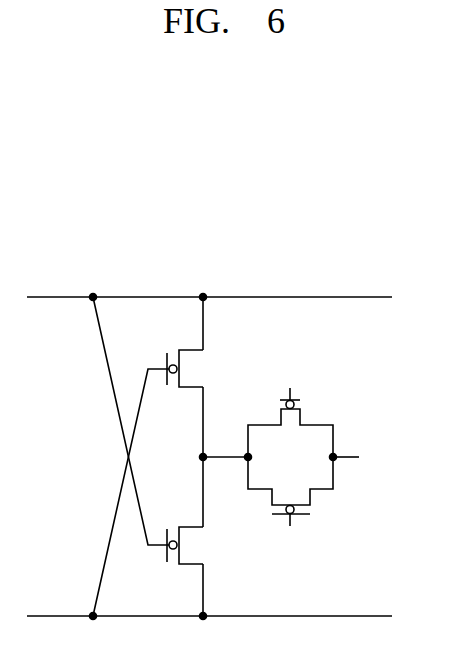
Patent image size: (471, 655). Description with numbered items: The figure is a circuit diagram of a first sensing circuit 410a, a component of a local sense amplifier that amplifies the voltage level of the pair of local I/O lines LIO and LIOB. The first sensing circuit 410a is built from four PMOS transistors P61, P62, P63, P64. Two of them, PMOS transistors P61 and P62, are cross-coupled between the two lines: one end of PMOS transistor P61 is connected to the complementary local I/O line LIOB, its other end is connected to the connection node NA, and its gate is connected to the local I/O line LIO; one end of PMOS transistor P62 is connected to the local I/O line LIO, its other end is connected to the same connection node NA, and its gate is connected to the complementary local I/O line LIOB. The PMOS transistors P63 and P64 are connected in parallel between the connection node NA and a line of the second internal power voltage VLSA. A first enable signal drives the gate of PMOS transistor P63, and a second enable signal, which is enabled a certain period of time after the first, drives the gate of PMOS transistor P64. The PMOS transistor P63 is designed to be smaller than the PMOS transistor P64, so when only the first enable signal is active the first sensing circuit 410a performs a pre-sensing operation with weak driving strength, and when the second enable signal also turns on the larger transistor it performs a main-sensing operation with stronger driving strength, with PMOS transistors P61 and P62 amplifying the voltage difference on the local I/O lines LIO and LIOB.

The first sensing circuit 410a is at (407, 238).
The PMOS transistor P61 is at (162, 456).
The PMOS transistor P62 is at (162, 456).
The PMOS transistor P63 is at (291, 421).
The PMOS transistor P64 is at (291, 493).
The local I/O line LIO is at (209, 281).
The complementary local I/O line LIOB is at (209, 631).
The connection node NA is at (207, 458).
The second internal power voltage VLSA is at (369, 454).